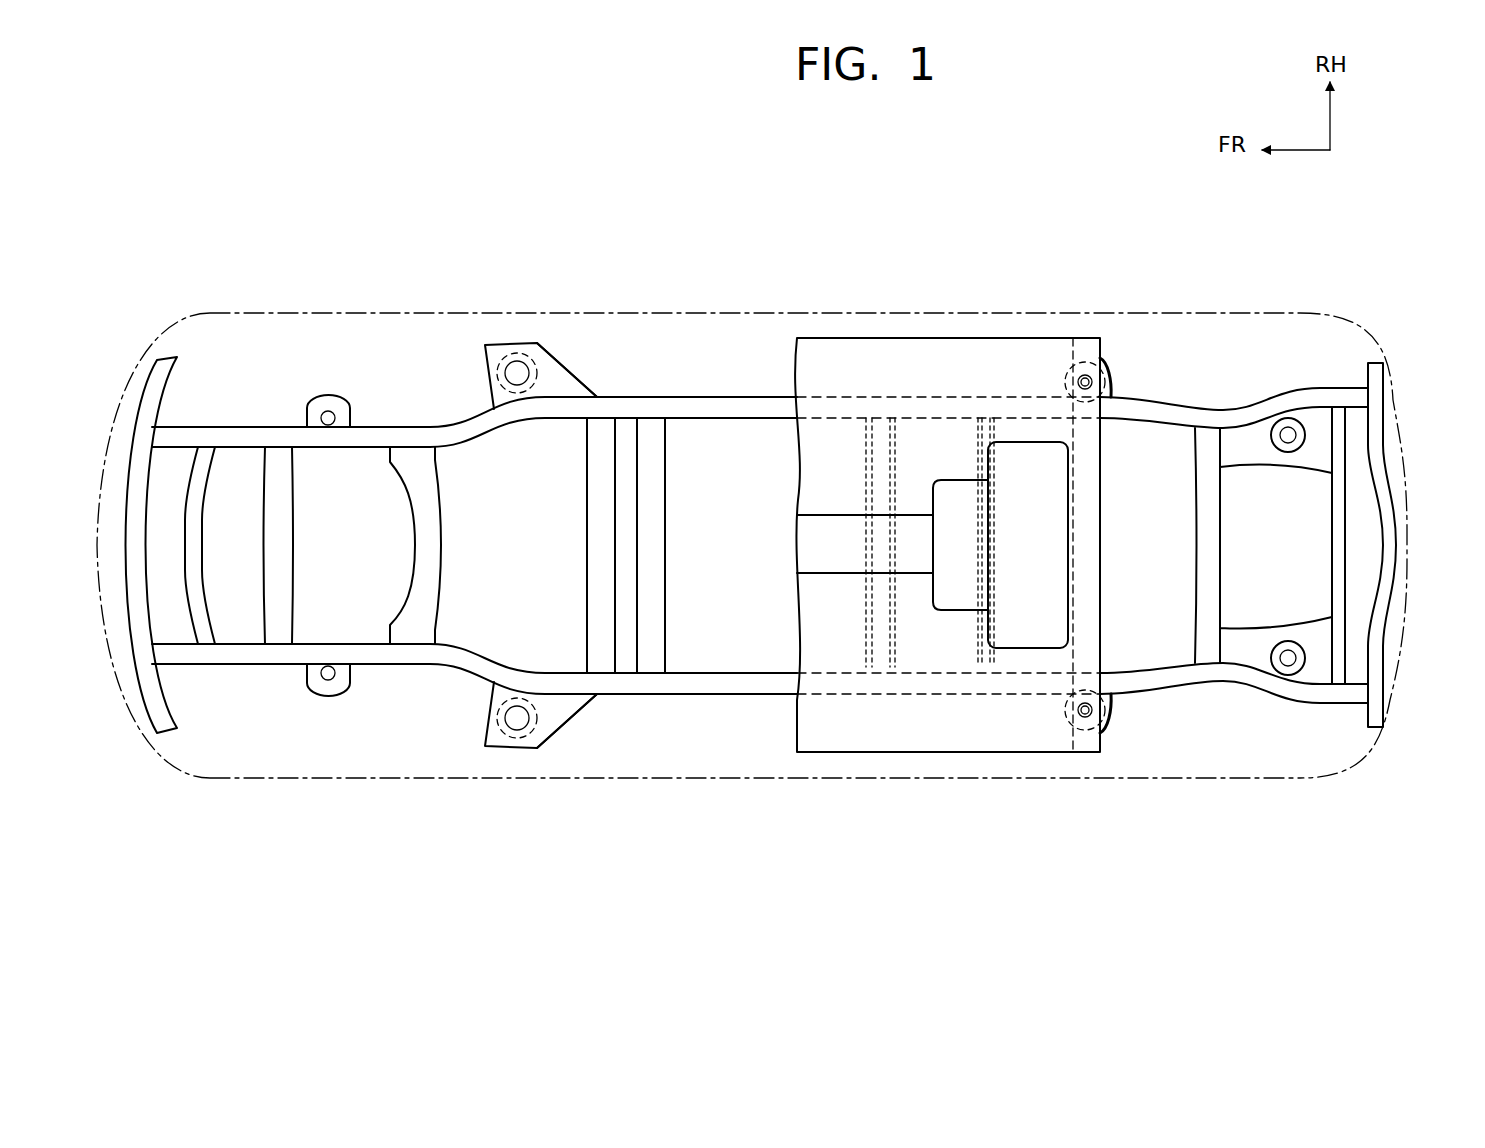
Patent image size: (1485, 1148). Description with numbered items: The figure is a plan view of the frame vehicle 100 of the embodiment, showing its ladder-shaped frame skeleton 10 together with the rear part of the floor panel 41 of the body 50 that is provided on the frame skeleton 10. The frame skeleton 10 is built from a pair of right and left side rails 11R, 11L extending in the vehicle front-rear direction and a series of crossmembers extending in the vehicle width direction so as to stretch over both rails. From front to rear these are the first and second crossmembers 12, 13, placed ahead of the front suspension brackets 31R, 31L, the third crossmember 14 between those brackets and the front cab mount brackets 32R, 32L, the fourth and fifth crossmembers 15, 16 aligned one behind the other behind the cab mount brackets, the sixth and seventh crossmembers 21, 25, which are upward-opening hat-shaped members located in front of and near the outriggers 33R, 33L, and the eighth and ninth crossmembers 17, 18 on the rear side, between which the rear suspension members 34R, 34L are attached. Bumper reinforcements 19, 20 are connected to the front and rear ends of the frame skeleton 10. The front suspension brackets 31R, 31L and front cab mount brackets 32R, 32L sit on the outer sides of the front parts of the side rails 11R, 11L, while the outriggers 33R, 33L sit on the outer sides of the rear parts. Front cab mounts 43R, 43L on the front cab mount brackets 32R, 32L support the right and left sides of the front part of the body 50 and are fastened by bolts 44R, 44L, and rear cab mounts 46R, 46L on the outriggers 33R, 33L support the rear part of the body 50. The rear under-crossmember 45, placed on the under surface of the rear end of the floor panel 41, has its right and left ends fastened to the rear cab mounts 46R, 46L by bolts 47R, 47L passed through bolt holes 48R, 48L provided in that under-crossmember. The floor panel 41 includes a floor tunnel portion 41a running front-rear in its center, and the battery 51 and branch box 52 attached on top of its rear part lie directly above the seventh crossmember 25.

The frame vehicle 100 is at (218, 195).
The frame skeleton 10 is at (214, 750).
The body 50 is at (722, 308).
The bumper reinforcement 19 is at (147, 378).
The right side rail 11R is at (470, 410).
The left side rail 11L is at (405, 667).
The first crossmember 12 is at (190, 478).
The second crossmember 13 is at (258, 478).
The third crossmember 14 is at (445, 540).
The fourth crossmember 15 is at (587, 480).
The fifth crossmember 16 is at (665, 488).
The eighth crossmember 17 is at (1200, 590).
The ninth crossmember 18 is at (1347, 557).
The bumper reinforcement 20 is at (1397, 523).
The sixth crossmember 21 is at (860, 637).
The seventh crossmember 25 is at (977, 648).
The right front suspension bracket 31R is at (335, 400).
The left front suspension bracket 31L is at (322, 700).
The right front cab mount bracket 32R is at (563, 279).
The left front cab mount bracket 32L is at (508, 803).
The right outrigger 33R is at (1089, 287).
The left outrigger 33L is at (1102, 816).
The right rear suspension member 34R is at (1297, 418).
The left rear suspension member 34L is at (1290, 668).
The floor panel 41 is at (935, 597).
The floor tunnel portion 41a is at (833, 514).
The right front cab mount 43R is at (540, 342).
The left front cab mount 43L is at (552, 745).
The bolt 44R is at (517, 360).
The bolt 44L is at (497, 726).
The rear under-crossmember 45 is at (1082, 374).
The right rear cab mount 46R is at (1062, 378).
The left rear cab mount 46L is at (1080, 718).
The bolt 47R is at (1110, 378).
The bolt 47L is at (1131, 813).
The bolt hole 48R is at (1085, 373).
The bolt hole 48L is at (1085, 722).
The battery 51 is at (1028, 545).
The branch box 52 is at (960, 545).